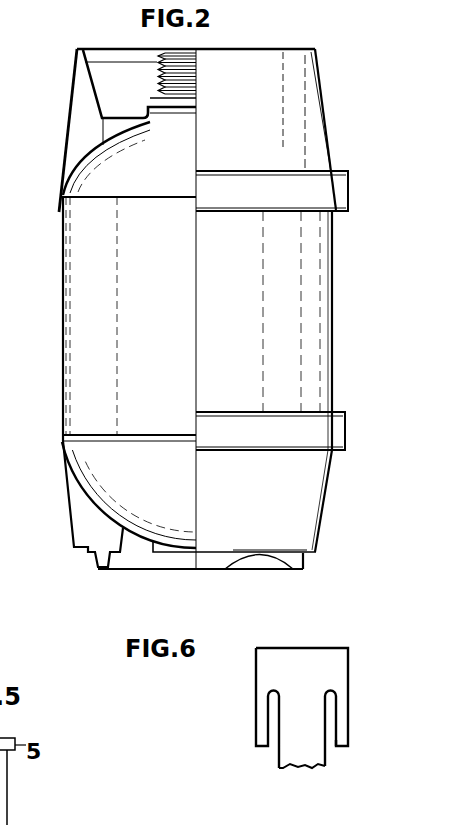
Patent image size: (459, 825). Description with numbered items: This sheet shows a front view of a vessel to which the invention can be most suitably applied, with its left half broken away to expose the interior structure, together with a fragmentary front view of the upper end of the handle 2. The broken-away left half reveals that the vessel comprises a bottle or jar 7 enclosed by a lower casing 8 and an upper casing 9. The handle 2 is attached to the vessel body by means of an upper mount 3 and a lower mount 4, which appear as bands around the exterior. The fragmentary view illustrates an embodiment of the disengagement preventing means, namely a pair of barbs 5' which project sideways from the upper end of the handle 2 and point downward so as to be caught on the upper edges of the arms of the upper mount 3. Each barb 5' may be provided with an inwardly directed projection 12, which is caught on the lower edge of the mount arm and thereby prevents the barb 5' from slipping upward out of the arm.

In FIG. 2, the upper casing 9 is at (72, 93).
In FIG. 2, the upper mount 3 is at (343, 183).
In FIG. 2, the bottle or jar 7 is at (62, 318).
In FIG. 2, the lower mount 4 is at (343, 414).
In FIG. 2, the lower casing 8 is at (68, 498).
In FIG. 6, the barbs 5' is at (301, 708).
In FIG. 6, the handle 2 is at (300, 750).
In FIG. 6, the inwardly directed projection 12 is at (329, 749).